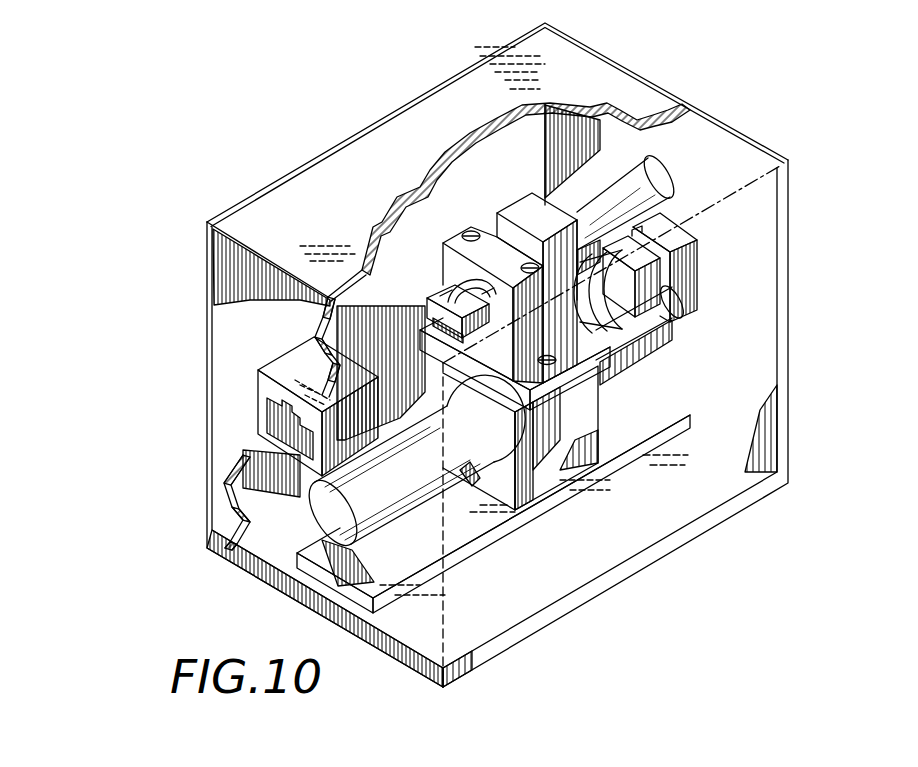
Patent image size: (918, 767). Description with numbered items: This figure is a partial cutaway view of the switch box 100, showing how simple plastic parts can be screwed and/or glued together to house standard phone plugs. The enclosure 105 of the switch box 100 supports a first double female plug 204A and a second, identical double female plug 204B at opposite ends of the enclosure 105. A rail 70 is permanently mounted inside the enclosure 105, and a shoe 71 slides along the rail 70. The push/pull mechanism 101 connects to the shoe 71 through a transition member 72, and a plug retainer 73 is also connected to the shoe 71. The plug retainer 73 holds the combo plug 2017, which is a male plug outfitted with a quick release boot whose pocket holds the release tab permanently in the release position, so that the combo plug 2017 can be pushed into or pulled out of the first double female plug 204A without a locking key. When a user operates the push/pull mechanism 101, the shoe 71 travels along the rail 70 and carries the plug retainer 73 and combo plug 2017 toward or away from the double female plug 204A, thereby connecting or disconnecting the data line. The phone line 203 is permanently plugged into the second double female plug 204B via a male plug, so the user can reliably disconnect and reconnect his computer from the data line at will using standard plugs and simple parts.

The switch box 100 is at (680, 66).
The push/pull mechanism 101 is at (650, 178).
The enclosure 105 is at (352, 230).
The transition member 72 is at (542, 221).
The plug retainer 73 is at (453, 233).
The combo plug 2017 is at (440, 286).
The first double female plug 204A is at (258, 383).
The second double female plug 204B is at (684, 307).
The phone line 203 is at (608, 318).
The shoe 71 is at (553, 455).
The rail 70 is at (333, 514).